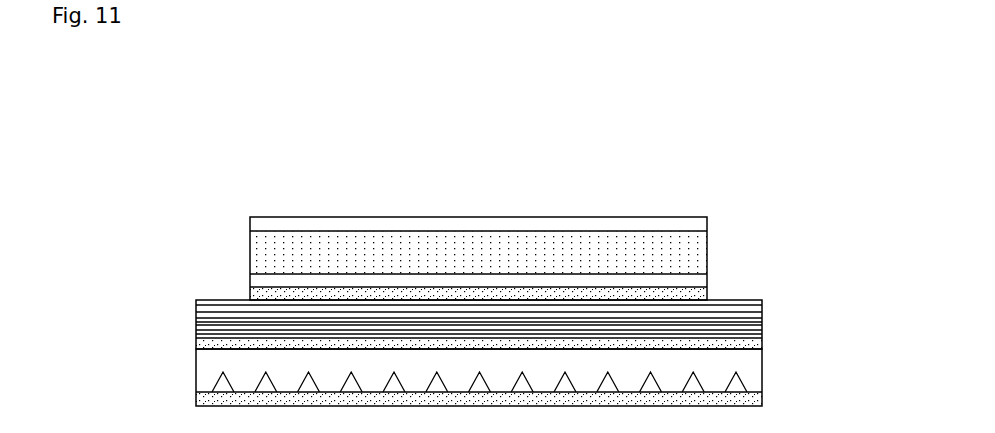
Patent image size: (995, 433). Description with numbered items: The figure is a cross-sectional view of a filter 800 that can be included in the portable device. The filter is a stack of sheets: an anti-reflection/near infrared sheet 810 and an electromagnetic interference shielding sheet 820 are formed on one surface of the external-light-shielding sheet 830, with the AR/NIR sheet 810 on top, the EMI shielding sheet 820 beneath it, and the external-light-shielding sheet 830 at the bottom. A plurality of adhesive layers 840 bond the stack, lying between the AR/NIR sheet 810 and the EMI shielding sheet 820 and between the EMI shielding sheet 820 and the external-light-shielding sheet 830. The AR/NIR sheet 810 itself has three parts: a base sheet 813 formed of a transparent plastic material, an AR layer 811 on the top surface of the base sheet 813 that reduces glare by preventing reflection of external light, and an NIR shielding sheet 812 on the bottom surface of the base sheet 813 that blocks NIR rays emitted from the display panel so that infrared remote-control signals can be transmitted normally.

The filter 800 is at (213, 184).
The anti-reflection/near infrared sheet 810 is at (552, 251).
The AR layer 811 is at (697, 223).
The NIR shielding sheet 812 is at (688, 285).
The base sheet 813 is at (687, 252).
The electromagnetic interference shielding sheet 820 is at (747, 318).
The external-light-shielding sheet 830 is at (762, 366).
The adhesive layers 840 is at (272, 294).